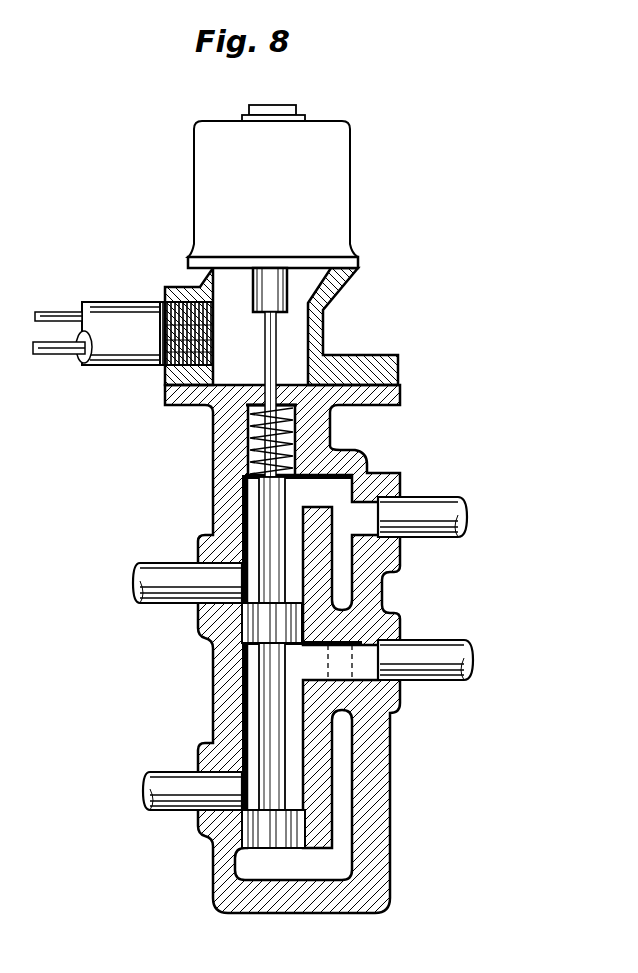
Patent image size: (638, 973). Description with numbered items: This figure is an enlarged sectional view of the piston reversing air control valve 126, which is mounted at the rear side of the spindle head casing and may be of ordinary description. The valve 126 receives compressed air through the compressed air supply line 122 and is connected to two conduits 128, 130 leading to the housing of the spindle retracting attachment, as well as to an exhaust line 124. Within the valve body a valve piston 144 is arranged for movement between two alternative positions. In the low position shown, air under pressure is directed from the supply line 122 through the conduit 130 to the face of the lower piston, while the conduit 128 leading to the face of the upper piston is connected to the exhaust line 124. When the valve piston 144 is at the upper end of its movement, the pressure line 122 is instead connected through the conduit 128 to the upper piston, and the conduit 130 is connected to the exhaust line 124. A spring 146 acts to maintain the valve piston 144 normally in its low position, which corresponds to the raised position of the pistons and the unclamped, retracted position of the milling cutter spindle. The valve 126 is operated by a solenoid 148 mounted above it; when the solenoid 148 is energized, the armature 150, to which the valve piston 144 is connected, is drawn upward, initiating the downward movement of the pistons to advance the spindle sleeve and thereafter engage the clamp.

The compressed air supply line 122 is at (153, 776).
The exhaust line 124 is at (138, 565).
The air control valve 126 is at (358, 457).
The conduit 128 is at (453, 497).
The conduit 130 is at (467, 640).
The valve piston 144 is at (268, 622).
The spring 146 is at (248, 446).
The solenoid 148 is at (273, 186).
The armature 150 is at (288, 304).